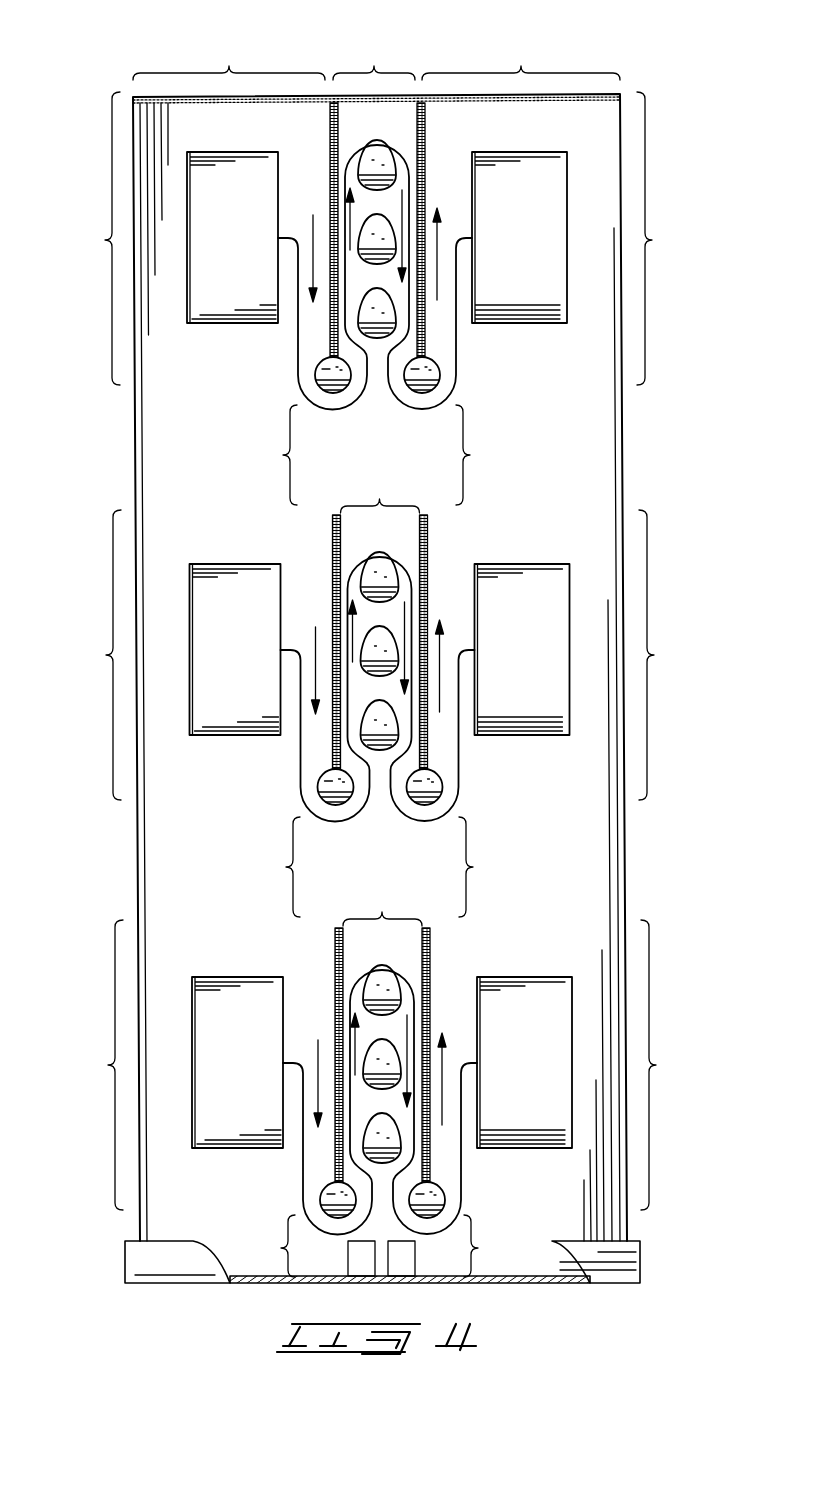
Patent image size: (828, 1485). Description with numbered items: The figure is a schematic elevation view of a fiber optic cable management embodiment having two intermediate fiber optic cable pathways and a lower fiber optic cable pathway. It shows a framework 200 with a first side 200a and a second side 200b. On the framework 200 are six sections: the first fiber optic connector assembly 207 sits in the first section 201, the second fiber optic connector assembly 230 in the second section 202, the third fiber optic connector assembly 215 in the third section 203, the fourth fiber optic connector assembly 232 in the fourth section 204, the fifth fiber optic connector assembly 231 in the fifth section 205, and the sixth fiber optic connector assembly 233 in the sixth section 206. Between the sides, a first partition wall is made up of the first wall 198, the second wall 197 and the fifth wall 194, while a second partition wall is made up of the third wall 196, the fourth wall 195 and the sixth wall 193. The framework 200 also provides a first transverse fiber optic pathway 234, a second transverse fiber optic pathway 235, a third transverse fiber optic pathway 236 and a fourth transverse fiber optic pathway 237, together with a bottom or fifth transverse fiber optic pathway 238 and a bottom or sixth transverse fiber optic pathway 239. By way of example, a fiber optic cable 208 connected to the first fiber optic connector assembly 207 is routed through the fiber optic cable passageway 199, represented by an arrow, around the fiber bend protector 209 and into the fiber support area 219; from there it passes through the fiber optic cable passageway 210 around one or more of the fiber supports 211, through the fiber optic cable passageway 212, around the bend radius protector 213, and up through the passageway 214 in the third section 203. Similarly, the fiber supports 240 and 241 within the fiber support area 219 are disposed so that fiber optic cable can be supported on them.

The framework 200 is at (411, 58).
The first side 200a is at (264, 60).
The second side 200b is at (550, 60).
The fiber support area 219 is at (377, 481).
The first section 201 is at (85, 238).
The second section 202 is at (86, 655).
The third section 203 is at (674, 238).
The fourth section 204 is at (675, 655).
The fifth section 205 is at (87, 1065).
The sixth section 206 is at (676, 1065).
The first wall 198 is at (328, 133).
The third wall 196 is at (426, 133).
The second wall 197 is at (331, 545).
The fourth wall 195 is at (430, 545).
The fifth wall 194 is at (334, 957).
The sixth wall 193 is at (431, 957).
The fiber supports 211 is at (385, 165).
The fiber support 240 is at (387, 575).
The fiber support 241 is at (389, 987).
The fiber optic cable passageway 210 is at (348, 212).
The fiber optic cable passageway 212 is at (400, 207).
The fiber optic cable passageway 199 is at (313, 233).
The passageway 214 is at (440, 235).
The first fiber optic connector assembly 207 is at (213, 279).
The third fiber optic connector assembly 215 is at (501, 279).
The second fiber optic connector assembly 230 is at (215, 687).
The fourth fiber optic connector assembly 232 is at (503, 687).
The fifth fiber optic connector assembly 231 is at (218, 1099).
The sixth fiber optic connector assembly 233 is at (506, 1099).
The fiber optic cable 208 is at (297, 346).
The fiber bend protector 209 is at (313, 364).
The bend radius protector 213 is at (440, 362).
The first transverse fiber optic pathway 234 is at (259, 455).
The second transverse fiber optic pathway 235 is at (493, 455).
The third transverse fiber optic pathway 236 is at (262, 867).
The fourth transverse fiber optic pathway 237 is at (496, 867).
The bottom or fifth transverse fiber optic pathway 238 is at (260, 1246).
The bottom or sixth transverse fiber optic pathway 239 is at (501, 1246).